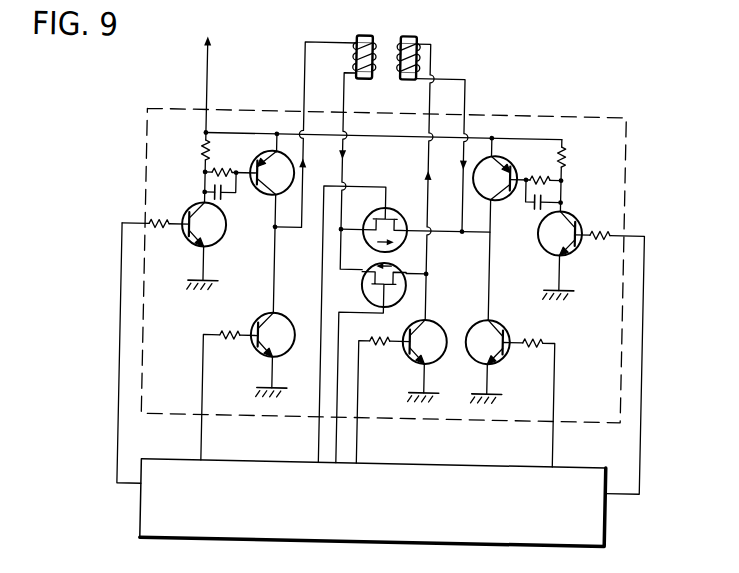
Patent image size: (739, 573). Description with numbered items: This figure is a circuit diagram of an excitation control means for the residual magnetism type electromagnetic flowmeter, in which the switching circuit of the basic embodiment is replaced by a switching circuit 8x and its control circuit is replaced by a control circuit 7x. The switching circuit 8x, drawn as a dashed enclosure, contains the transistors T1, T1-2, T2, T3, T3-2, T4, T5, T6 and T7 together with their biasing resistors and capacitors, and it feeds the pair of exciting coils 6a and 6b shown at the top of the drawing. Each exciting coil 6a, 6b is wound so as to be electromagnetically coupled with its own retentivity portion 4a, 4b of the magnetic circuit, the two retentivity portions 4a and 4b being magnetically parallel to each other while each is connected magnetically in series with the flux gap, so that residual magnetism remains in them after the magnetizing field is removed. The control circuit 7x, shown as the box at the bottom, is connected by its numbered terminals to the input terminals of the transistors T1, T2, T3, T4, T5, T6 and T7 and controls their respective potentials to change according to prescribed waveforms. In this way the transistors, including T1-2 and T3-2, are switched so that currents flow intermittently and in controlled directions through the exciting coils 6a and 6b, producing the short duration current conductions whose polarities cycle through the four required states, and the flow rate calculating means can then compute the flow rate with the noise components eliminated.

The retentivity portion 4a is at (352, 36).
The retentivity portion 4b is at (410, 35).
The exciting coil 6a is at (369, 79).
The exciting coil 6b is at (396, 37).
The control circuit 7x is at (610, 526).
The switching circuit 8x is at (624, 123).
The transistor T1 is at (224, 233).
The transistor T1-2 is at (260, 153).
The transistor T2 is at (286, 316).
The transistor T3 is at (539, 241).
The transistor T3-2 is at (511, 154).
The transistor T4 is at (506, 320).
The transistor T5 is at (392, 208).
The transistor T6 is at (362, 287).
The transistor T7 is at (441, 320).